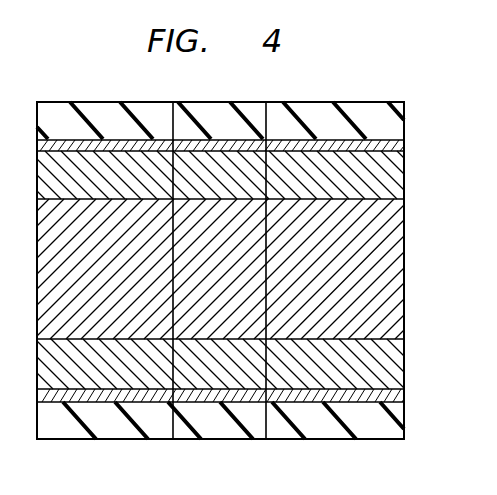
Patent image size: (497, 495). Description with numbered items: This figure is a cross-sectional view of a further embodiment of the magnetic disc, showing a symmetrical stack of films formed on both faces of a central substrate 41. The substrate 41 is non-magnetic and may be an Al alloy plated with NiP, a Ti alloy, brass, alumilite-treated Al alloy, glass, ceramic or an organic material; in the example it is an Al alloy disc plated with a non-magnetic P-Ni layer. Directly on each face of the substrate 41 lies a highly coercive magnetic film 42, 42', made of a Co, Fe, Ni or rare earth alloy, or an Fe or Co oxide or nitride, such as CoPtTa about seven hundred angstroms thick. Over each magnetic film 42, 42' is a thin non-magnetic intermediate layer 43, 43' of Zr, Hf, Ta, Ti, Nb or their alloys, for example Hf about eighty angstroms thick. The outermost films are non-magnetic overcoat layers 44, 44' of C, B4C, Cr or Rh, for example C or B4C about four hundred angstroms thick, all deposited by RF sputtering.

The substrate 41 is at (396, 258).
The highly coercive magnetic film 42 is at (242, 175).
The non-magnetic intermediate layer 43 is at (241, 151).
The non-magnetic overcoat layer 44 is at (242, 121).
The highly coercive magnetic film 42' is at (243, 364).
The non-magnetic intermediate layer 43' is at (245, 403).
The non-magnetic overcoat layer 44' is at (260, 426).